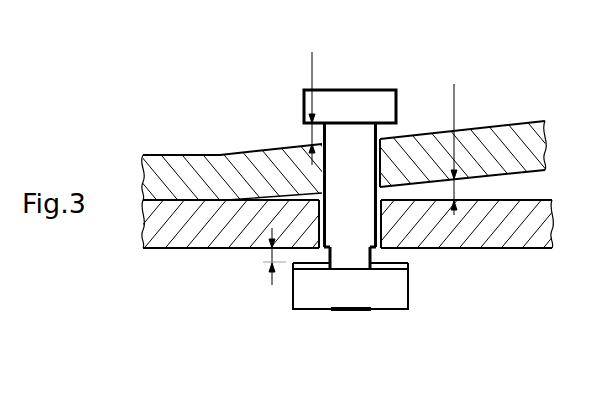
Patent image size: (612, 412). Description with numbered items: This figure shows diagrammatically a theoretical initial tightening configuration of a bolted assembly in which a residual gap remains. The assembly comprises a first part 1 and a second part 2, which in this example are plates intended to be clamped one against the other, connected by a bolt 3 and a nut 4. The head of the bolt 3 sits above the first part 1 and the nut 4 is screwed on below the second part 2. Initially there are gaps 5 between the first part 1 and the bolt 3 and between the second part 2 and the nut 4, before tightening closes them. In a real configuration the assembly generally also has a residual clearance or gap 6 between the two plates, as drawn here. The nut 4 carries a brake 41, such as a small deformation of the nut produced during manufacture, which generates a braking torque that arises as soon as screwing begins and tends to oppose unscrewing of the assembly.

The first part 1 is at (185, 172).
The second part 2 is at (187, 232).
The bolt 3 is at (348, 100).
The nut 4 is at (345, 290).
The brake 41 is at (395, 265).
The gap 5 is at (284, 169).
The residual gap 6 is at (459, 149).